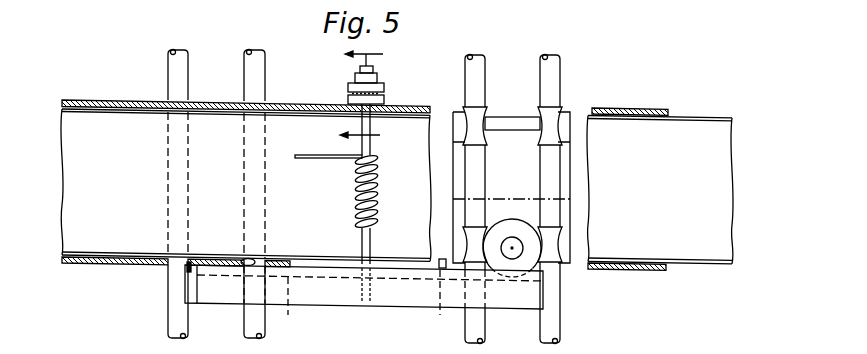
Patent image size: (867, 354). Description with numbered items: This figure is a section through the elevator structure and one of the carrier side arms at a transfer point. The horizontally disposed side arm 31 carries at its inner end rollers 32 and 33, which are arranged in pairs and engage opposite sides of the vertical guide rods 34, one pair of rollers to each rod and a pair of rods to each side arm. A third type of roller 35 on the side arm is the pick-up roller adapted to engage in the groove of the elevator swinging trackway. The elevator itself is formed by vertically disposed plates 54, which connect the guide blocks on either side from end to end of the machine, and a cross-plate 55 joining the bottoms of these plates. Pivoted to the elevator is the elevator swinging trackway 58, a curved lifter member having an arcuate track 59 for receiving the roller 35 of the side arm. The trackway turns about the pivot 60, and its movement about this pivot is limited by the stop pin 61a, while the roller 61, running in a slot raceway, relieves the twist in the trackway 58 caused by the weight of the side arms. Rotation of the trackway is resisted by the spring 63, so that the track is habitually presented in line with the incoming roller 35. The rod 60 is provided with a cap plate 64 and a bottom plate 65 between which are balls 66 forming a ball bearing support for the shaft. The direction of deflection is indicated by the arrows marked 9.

The adjusting shaft 9 is at (371, 100).
The side arm 31 is at (566, 187).
The roller 32 is at (473, 237).
The roller 33 is at (478, 110).
The vertical guide rod 34 is at (180, 62).
The roller 35 is at (521, 270).
The vertically disposed plate 54 is at (730, 181).
The cross-plate 55 is at (100, 266).
The elevator swinging trackway 58 is at (336, 292).
The arcuate track 59 is at (282, 310).
The pivot 60 is at (362, 239).
The roller 61 is at (248, 262).
The stop pin 61a is at (431, 301).
The spring 63 is at (355, 182).
The cap plate 64 is at (384, 88).
The bottom plate 65 is at (384, 99).
The balls 66 is at (348, 90).